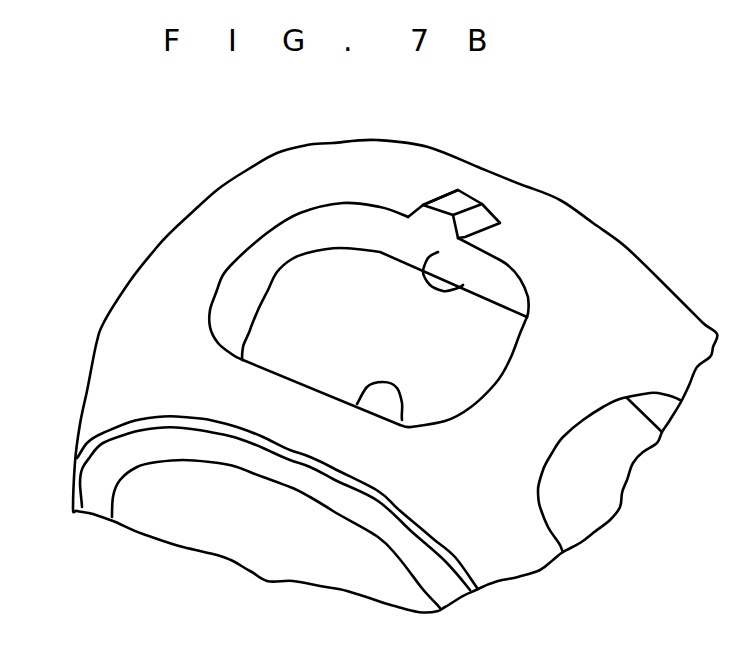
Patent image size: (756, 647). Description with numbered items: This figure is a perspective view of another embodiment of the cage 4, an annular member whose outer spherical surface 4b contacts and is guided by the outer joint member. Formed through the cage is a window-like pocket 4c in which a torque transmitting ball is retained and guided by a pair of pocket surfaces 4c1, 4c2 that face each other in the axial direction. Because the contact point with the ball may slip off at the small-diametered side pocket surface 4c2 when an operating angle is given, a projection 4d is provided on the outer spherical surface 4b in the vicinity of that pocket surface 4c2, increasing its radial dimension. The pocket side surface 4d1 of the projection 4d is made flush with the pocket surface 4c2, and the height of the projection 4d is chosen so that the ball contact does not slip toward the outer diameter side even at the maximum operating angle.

The cage 4 is at (183, 170).
The outer spherical surface 4b is at (172, 260).
The pocket 4c is at (306, 324).
The pocket surface 4c1 is at (402, 420).
The small-diametered side pocket surface 4c2 is at (500, 261).
The projection 4d is at (465, 200).
The pocket side surface 4d1 is at (431, 217).